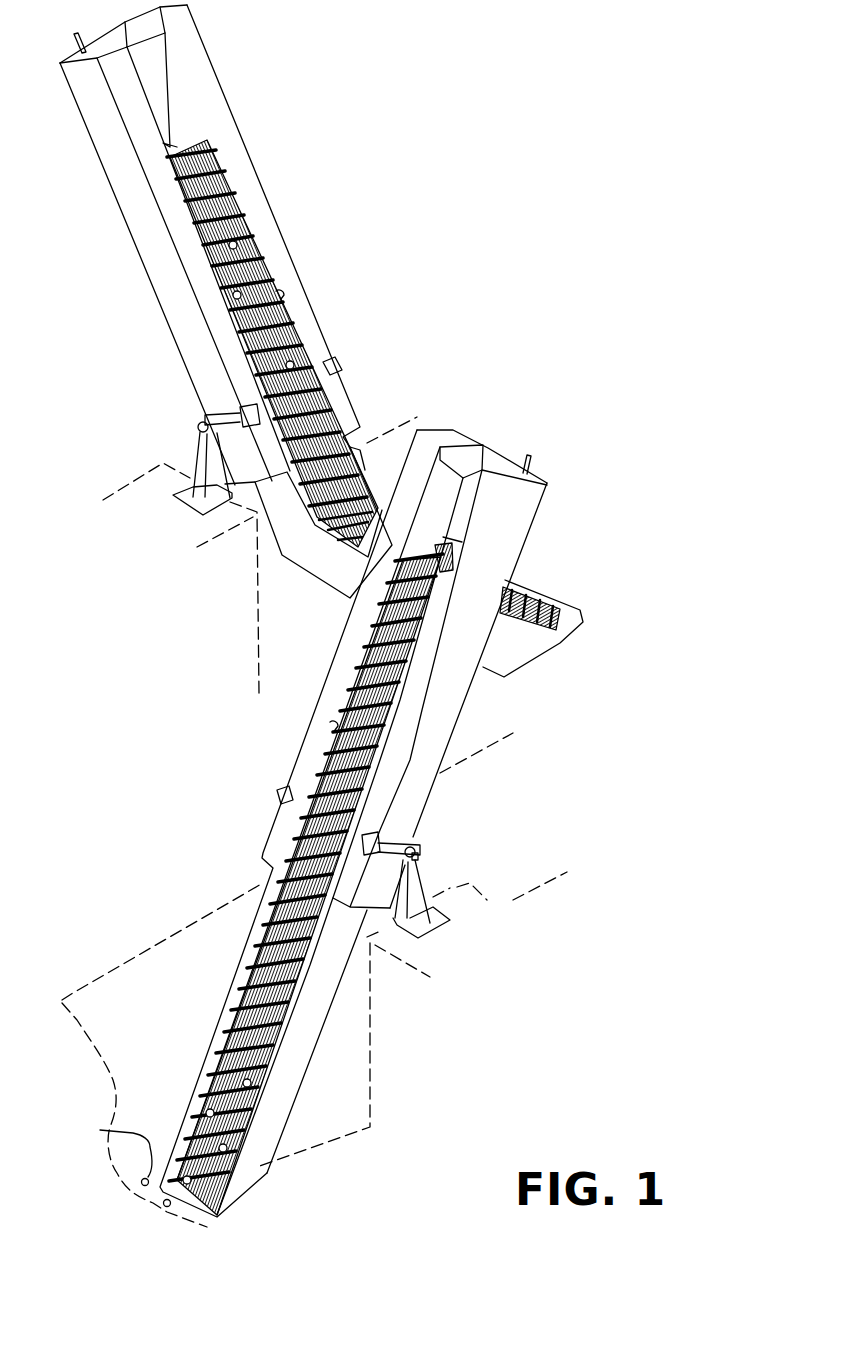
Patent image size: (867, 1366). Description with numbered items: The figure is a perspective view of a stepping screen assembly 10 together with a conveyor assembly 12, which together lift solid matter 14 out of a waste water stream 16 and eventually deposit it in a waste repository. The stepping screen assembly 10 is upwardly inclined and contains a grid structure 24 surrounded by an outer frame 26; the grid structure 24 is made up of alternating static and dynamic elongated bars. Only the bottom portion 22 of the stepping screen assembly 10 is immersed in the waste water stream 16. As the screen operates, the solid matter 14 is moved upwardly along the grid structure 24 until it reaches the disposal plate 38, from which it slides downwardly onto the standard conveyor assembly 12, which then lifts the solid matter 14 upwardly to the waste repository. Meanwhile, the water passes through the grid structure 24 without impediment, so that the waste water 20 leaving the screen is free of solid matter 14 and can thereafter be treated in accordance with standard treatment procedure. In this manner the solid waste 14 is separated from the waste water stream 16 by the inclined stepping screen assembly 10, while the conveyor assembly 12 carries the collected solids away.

The stepping screen assembly 10 is at (253, 767).
The conveyor assembly 12 is at (297, 168).
The solid matter 14 is at (237, 220).
The waste water stream 16 is at (147, 1202).
The waste water 20 is at (477, 857).
The bottom portion 22 is at (257, 1170).
The grid structure 24 is at (272, 915).
The outer frame 26 is at (227, 1017).
The disposal plate 38 is at (430, 577).